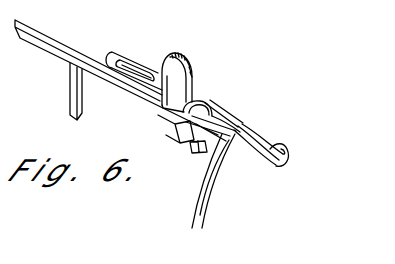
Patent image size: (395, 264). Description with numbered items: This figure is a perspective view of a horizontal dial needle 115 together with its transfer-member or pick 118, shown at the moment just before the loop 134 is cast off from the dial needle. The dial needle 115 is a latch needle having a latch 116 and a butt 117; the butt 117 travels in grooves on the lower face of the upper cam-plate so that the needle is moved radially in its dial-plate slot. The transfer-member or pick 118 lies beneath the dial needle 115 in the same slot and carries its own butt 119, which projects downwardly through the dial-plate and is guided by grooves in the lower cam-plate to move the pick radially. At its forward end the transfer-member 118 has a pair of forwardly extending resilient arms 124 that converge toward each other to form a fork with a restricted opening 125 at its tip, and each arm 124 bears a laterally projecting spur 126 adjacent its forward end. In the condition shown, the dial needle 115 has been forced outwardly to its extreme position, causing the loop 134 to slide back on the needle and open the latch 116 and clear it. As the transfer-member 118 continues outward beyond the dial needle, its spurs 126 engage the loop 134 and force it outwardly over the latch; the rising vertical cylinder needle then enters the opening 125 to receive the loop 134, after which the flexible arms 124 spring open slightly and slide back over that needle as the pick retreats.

The transfer-member or pick 118 is at (53, 39).
The butt 119 is at (70, 88).
The butt 117 is at (199, 67).
The resilient arms 124 is at (258, 95).
The dial needle 115 is at (210, 101).
The spur 126 is at (190, 188).
The latch 116 is at (268, 117).
The restricted opening 125 is at (194, 153).
The loop 134 is at (242, 183).